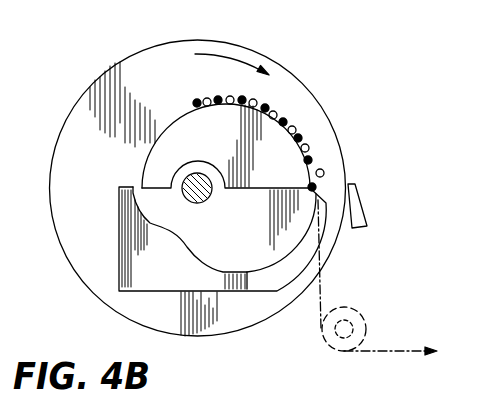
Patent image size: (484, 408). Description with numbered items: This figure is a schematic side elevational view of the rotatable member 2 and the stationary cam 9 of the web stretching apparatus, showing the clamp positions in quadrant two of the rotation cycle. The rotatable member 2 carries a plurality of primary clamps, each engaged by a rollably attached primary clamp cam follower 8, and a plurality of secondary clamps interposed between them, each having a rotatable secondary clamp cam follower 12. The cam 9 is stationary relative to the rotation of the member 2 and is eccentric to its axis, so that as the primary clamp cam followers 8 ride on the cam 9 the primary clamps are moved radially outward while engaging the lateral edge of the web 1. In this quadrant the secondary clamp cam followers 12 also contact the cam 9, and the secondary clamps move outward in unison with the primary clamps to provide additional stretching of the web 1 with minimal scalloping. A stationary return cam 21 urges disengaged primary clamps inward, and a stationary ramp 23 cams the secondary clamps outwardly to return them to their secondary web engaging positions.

The web 1 is at (320, 280).
The rotatable member 2 is at (70, 86).
The primary clamp cam follower 8 is at (266, 107).
The cam 9 is at (209, 149).
The secondary clamp cam follower 12 is at (293, 129).
The stationary return cam 21 is at (177, 273).
The stationary ramp 23 is at (360, 194).